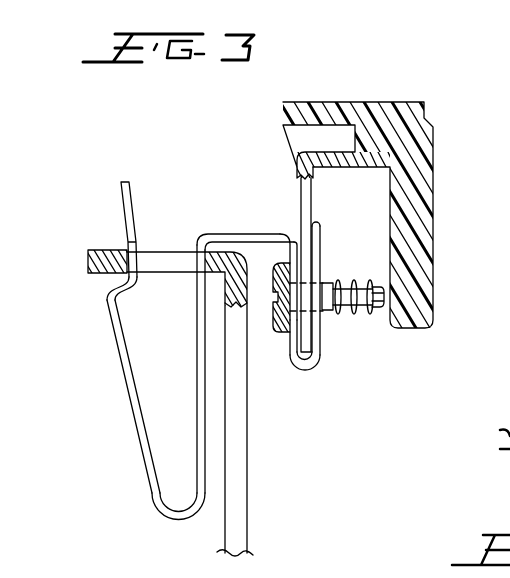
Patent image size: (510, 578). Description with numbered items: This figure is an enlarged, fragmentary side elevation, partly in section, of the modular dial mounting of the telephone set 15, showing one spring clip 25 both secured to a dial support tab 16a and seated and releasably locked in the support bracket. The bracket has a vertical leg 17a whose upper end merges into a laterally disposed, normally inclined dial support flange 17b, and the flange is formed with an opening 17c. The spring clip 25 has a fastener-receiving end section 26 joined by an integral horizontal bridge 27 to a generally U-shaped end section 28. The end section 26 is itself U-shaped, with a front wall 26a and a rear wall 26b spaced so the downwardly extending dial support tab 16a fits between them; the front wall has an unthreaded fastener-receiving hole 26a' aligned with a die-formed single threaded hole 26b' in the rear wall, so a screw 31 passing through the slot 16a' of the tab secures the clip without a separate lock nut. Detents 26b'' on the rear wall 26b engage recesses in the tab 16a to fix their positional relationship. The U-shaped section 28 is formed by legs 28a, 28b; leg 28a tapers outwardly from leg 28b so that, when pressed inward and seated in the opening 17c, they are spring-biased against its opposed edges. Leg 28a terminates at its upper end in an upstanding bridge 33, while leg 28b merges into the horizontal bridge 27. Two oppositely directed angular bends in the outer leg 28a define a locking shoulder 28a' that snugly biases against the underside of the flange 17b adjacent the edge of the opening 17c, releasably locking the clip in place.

The telephone set 15 is at (360, 93).
The dial support tab 16a is at (331, 291).
The fastener-receiving slot 16a' is at (283, 198).
The support bracket leg 17a is at (247, 463).
The dial support flange 17b is at (117, 251).
The flange opening 17c is at (157, 260).
The spring clip 25 is at (219, 358).
The fastener-receiving end section 26 is at (309, 331).
The front wall 26a is at (267, 261).
The unthreaded fastener-receiving hole 26a' is at (274, 361).
The rear wall 26b is at (347, 285).
The die-formed threaded hole 26b' is at (333, 275).
The detent 26b'' is at (344, 207).
The horizontal bridge 27 is at (222, 233).
The U-shaped end section 28 is at (150, 481).
The bifurcated leg 28a is at (113, 396).
The locking shoulder 28a' is at (96, 300).
The bifurcated leg 28b is at (198, 367).
The screw 31 is at (352, 316).
The upstanding bridge 33 is at (124, 224).